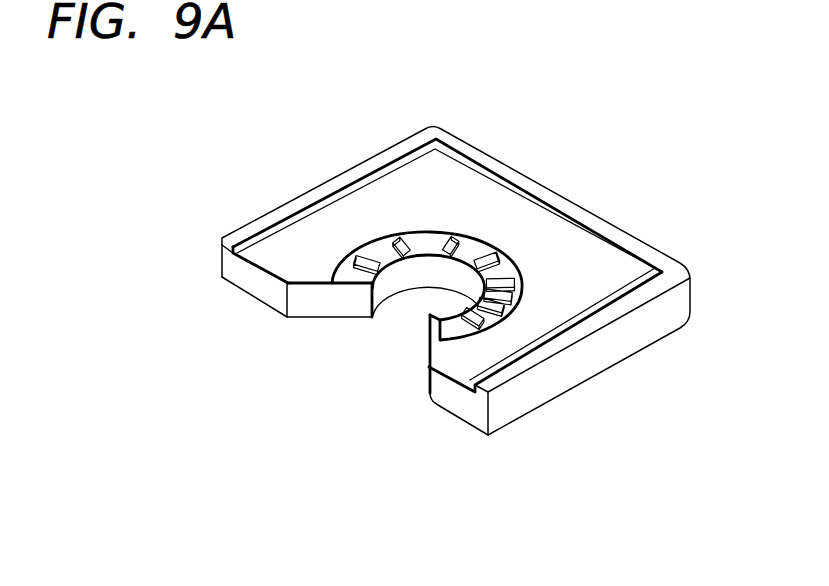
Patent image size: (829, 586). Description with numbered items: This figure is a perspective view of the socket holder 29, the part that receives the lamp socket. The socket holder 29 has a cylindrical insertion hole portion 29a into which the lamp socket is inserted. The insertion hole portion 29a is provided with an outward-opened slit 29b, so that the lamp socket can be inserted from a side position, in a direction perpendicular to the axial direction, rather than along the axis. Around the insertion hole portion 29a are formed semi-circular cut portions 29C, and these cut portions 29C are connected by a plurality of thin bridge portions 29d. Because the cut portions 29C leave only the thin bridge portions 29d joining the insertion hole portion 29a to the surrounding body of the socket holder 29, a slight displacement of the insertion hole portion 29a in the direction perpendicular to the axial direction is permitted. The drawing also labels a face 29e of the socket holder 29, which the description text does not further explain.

The socket holder 29 is at (610, 274).
The insertion hole portion 29a is at (459, 272).
The slit 29b is at (409, 301).
The cut portions 29C is at (432, 234).
The bridge portions 29d is at (399, 233).
The front face of holder 29e is at (341, 308).